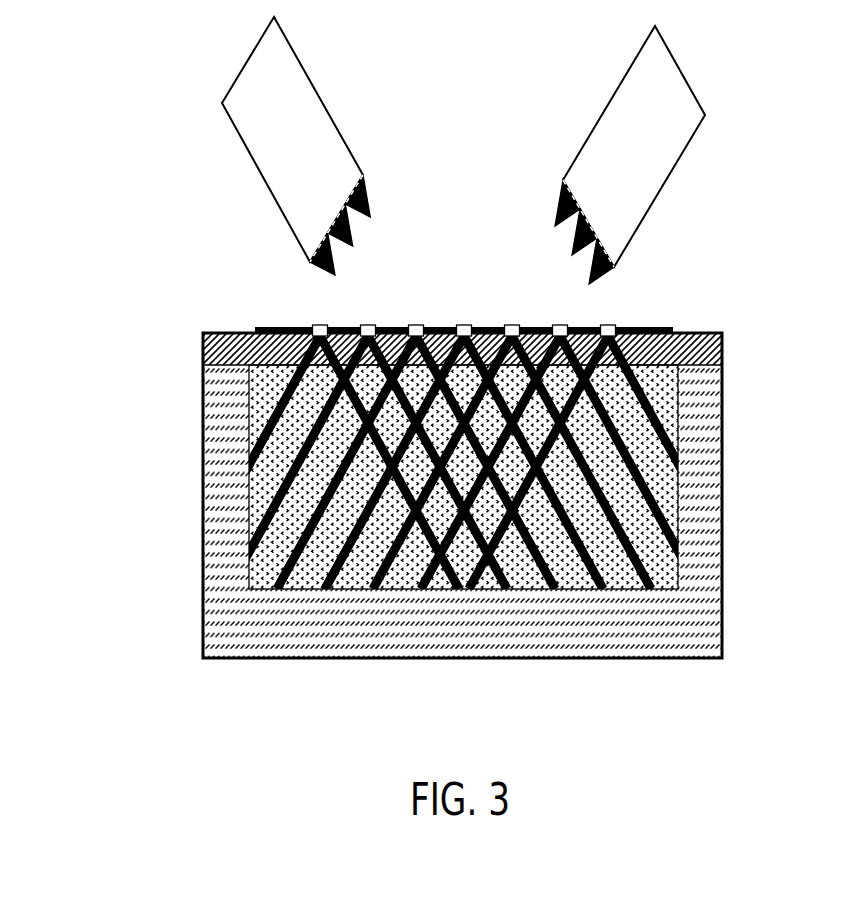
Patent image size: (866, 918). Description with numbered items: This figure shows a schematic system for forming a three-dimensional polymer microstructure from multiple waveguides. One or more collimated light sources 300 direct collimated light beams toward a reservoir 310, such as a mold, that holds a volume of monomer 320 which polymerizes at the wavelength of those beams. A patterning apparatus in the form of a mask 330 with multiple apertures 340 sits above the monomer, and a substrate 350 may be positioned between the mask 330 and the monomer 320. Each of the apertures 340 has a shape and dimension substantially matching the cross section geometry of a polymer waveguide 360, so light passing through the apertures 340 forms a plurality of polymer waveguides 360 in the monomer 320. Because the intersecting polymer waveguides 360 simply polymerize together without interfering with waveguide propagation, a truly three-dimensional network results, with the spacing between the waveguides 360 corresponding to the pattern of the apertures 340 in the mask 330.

The collimated light sources 300 is at (570, 120).
The reservoir 310 is at (218, 603).
The monomer 320 is at (675, 503).
The mask 330 is at (267, 326).
The apertures 340 is at (607, 326).
The substrate 350 is at (704, 332).
The polymer waveguides 360 is at (655, 423).